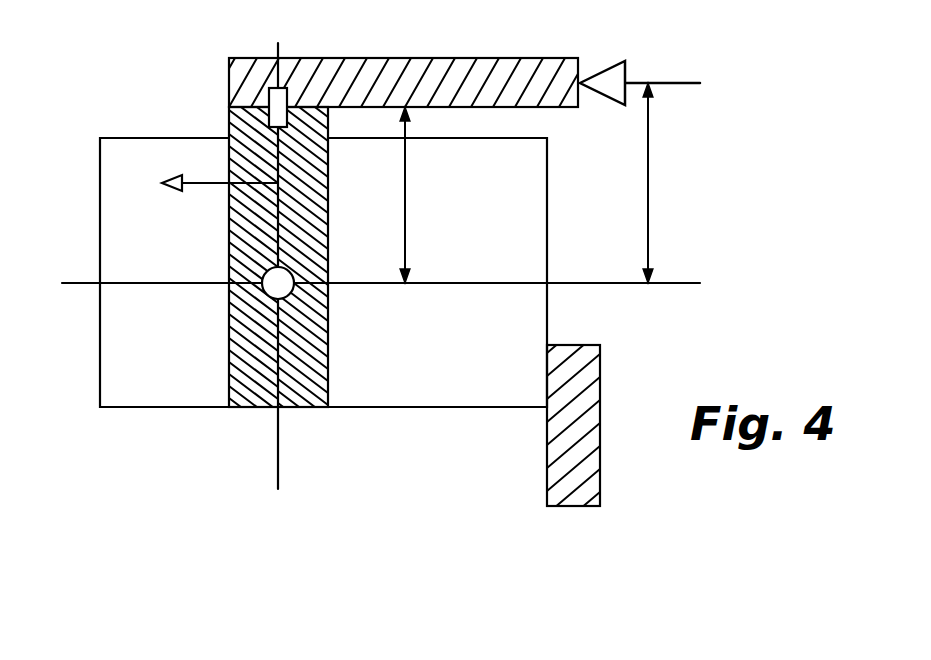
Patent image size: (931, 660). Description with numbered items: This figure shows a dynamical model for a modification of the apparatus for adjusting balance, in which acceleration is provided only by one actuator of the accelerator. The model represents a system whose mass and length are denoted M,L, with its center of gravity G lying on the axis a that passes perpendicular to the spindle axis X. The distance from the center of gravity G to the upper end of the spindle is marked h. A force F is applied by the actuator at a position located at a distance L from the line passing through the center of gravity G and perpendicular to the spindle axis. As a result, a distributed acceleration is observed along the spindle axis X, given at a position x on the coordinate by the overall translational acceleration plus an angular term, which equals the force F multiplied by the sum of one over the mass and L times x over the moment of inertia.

The x-coordinate X is at (277, 250).
The acceleration a is at (369, 283).
The center of gravity G is at (291, 272).
The force F is at (651, 83).
The distance h is at (415, 195).
The distance L is at (657, 183).
The mass and length M,L is at (323, 291).